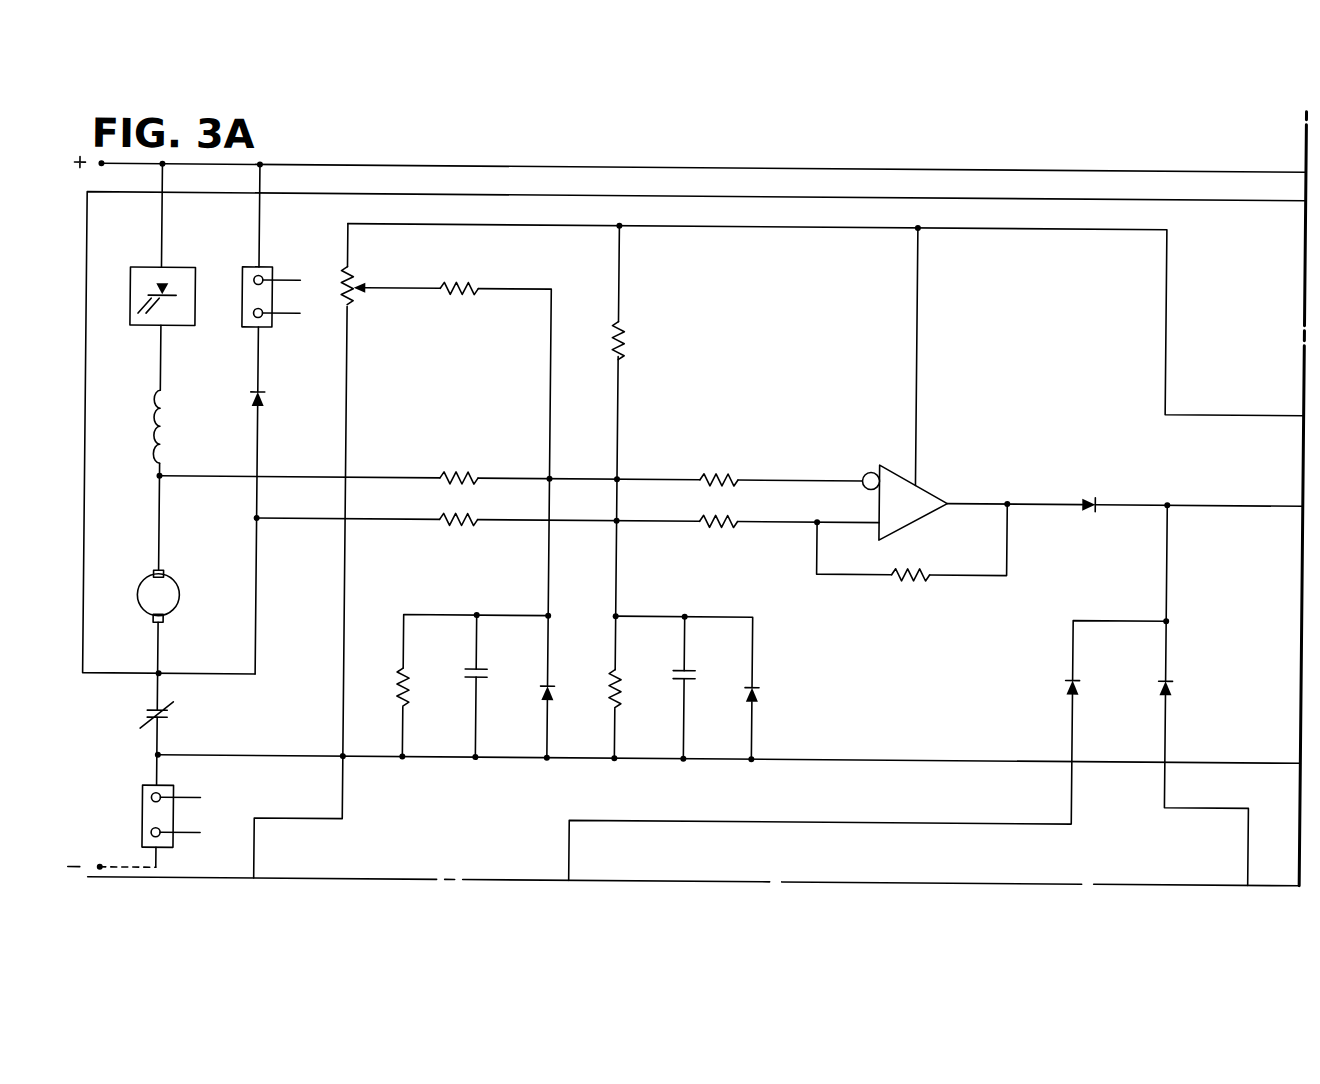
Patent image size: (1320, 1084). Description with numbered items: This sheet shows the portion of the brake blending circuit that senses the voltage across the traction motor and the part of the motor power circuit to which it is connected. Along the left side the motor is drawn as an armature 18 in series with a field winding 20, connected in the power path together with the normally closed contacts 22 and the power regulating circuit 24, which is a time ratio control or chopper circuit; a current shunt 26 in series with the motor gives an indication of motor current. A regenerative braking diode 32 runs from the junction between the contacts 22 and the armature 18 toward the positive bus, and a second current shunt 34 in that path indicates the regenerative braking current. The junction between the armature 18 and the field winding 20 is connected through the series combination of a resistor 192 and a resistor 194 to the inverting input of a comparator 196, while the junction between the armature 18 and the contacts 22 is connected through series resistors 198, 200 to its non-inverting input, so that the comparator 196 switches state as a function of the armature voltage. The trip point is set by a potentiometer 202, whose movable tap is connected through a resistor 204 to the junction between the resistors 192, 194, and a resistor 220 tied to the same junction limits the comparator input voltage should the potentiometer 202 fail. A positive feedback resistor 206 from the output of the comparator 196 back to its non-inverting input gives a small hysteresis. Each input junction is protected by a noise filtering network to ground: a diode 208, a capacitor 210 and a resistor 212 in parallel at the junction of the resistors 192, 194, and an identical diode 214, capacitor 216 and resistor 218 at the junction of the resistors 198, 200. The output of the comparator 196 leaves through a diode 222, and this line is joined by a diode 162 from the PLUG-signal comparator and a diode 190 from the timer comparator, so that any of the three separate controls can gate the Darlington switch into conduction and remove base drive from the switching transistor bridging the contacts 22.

The armature 18 is at (188, 582).
The field winding 20 is at (152, 391).
The normally closed contacts 22 is at (190, 710).
The power regulating circuit 24 is at (190, 262).
The current shunt 26 is at (150, 786).
The regenerative braking diode 32 is at (248, 390).
The current shunt 34 is at (276, 265).
The diode 162 is at (1070, 682).
The diode 190 is at (1192, 684).
The resistor 192 is at (470, 462).
The resistor 194 is at (732, 458).
The comparator 196 is at (932, 480).
The resistor 198 is at (472, 524).
The resistor 200 is at (732, 525).
The potentiometer 202 is at (368, 270).
The resistor 204 is at (464, 268).
The positive feedback resistor 206 is at (926, 578).
The diode 208 is at (544, 683).
The capacitor 210 is at (474, 658).
The resistor 212 is at (428, 695).
The diode 214 is at (750, 686).
The capacitor 216 is at (680, 657).
The resistor 218 is at (640, 694).
The resistor 220 is at (633, 334).
The diode 222 is at (1094, 475).